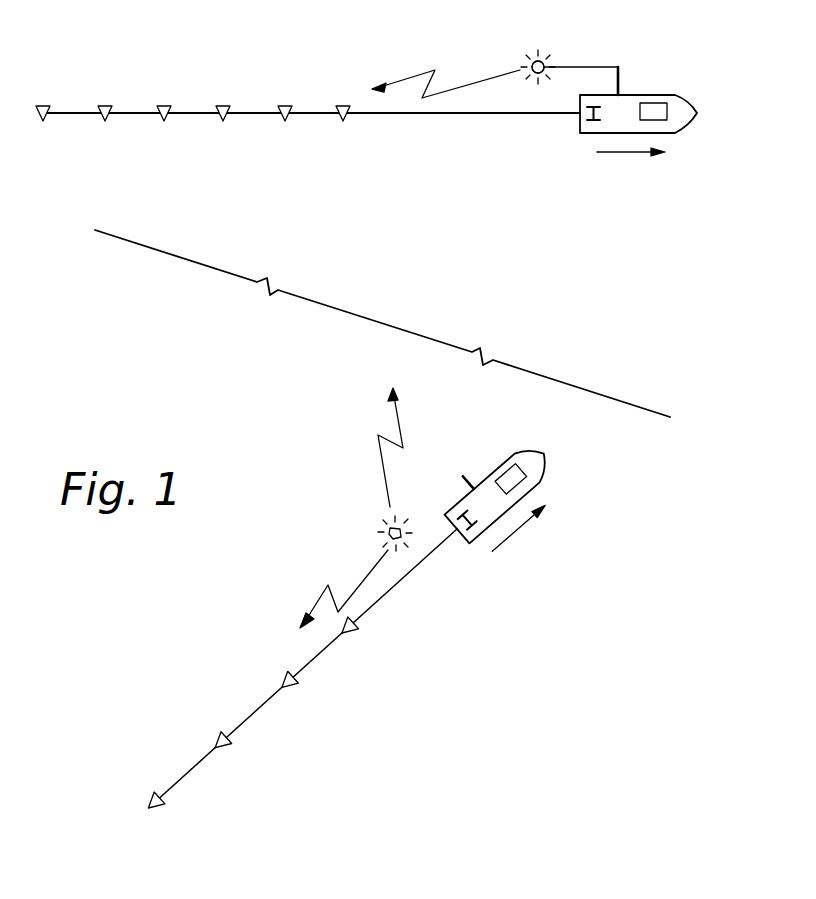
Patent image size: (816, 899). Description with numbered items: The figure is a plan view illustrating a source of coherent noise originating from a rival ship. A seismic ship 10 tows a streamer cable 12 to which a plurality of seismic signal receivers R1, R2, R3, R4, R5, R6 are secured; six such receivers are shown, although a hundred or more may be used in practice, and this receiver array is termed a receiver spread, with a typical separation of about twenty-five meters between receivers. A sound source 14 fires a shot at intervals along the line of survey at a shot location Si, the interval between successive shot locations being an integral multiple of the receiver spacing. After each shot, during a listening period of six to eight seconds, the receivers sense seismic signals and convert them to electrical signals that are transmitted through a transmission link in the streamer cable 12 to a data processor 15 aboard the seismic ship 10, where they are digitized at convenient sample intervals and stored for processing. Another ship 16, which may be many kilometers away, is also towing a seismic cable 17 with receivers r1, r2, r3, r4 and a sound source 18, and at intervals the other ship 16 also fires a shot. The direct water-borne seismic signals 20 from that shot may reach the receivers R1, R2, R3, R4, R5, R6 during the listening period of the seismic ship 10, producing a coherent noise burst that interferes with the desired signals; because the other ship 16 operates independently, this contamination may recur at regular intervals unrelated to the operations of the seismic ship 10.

The seismic ship 10 is at (643, 94).
The streamer cable 12 is at (500, 117).
The sound source 14 is at (548, 62).
The data processor 15 is at (667, 112).
The another ship 16 is at (536, 483).
The seismic cable 17 is at (398, 580).
The sound source 18 is at (385, 538).
The direct water-borne seismic signals 20 is at (402, 432).
The seismic signal receiver R1 is at (343, 98).
The seismic signal receiver R2 is at (284, 98).
The seismic signal receiver R3 is at (222, 98).
The seismic signal receiver R4 is at (163, 98).
The seismic signal receiver R5 is at (104, 98).
The seismic signal receiver R6 is at (42, 98).
The receiver r1 is at (360, 638).
The receiver r2 is at (299, 693).
The receiver r3 is at (230, 756).
The receiver r4 is at (165, 813).
The shot location Si is at (536, 41).